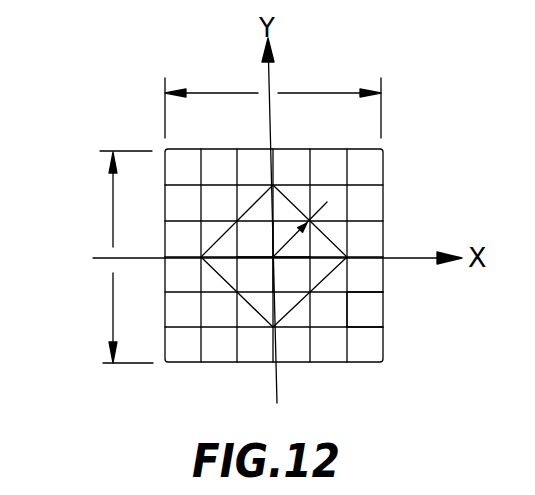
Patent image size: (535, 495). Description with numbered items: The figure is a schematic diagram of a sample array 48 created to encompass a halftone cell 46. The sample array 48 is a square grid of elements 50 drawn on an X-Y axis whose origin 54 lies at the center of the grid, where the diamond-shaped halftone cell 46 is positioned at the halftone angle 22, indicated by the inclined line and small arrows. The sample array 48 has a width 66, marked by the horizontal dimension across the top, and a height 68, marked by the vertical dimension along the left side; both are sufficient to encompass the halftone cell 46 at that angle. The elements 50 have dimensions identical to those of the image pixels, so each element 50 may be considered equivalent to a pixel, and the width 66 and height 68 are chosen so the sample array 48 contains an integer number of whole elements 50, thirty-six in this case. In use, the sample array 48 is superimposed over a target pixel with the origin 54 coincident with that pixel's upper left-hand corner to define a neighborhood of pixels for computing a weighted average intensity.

The halftone angle 22 is at (283, 211).
The halftone cell 46 is at (250, 303).
The sample array 48 is at (390, 224).
The elements 50 is at (347, 310).
The origin 54 is at (275, 259).
The width 66 is at (318, 92).
The height 68 is at (112, 212).